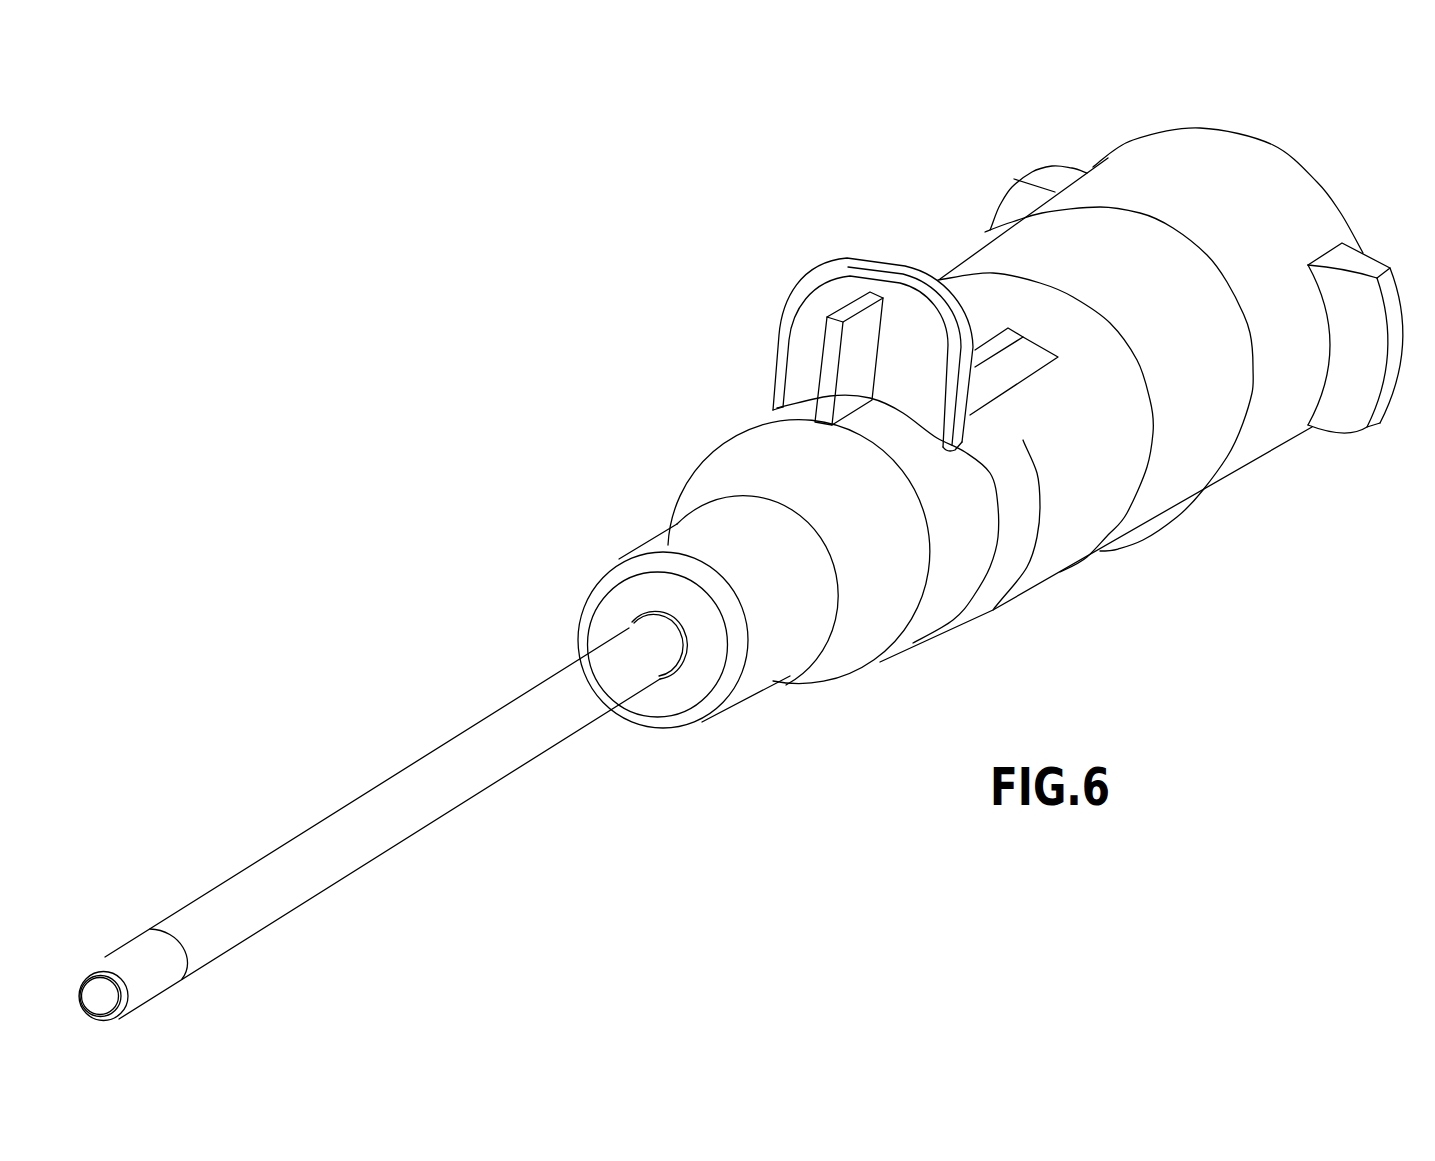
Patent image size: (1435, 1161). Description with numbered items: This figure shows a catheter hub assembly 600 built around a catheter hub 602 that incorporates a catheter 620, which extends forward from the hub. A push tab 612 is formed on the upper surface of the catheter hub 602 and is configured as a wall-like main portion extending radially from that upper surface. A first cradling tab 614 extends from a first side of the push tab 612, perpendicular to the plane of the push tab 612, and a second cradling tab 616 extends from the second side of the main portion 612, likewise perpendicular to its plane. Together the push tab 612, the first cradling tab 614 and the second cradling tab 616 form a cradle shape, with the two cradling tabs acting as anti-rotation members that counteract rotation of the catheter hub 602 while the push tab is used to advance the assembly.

The needle assembly 600 is at (737, 221).
The catheter hub 602 is at (777, 633).
The push tab 612 is at (912, 355).
The first cradling tab 614 is at (1010, 369).
The second cradling tab 616 is at (858, 330).
The catheter 620 is at (387, 830).